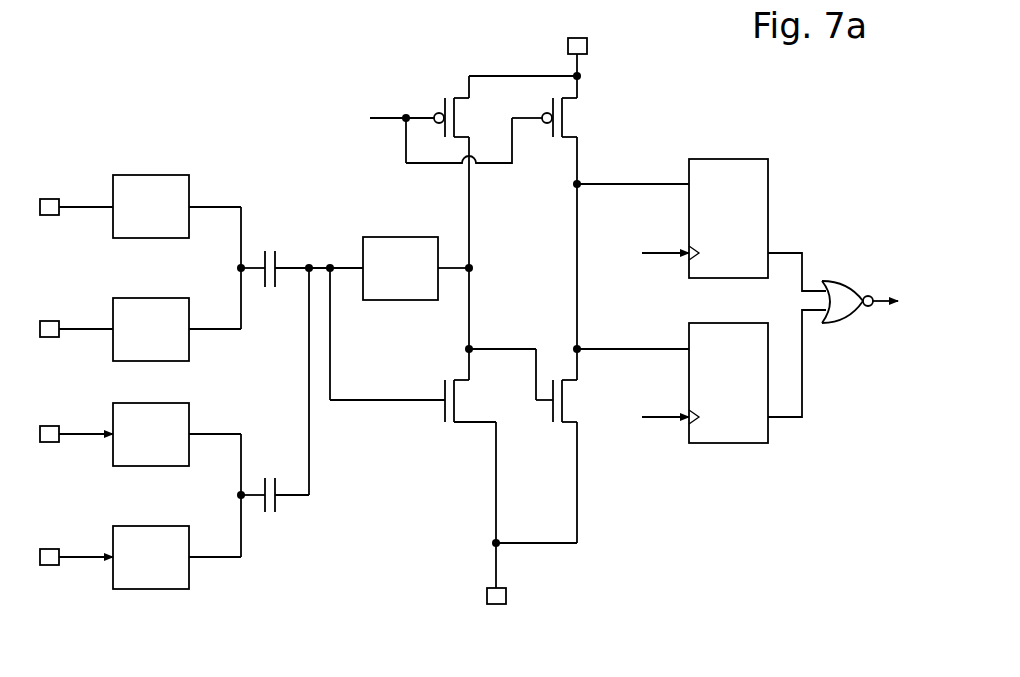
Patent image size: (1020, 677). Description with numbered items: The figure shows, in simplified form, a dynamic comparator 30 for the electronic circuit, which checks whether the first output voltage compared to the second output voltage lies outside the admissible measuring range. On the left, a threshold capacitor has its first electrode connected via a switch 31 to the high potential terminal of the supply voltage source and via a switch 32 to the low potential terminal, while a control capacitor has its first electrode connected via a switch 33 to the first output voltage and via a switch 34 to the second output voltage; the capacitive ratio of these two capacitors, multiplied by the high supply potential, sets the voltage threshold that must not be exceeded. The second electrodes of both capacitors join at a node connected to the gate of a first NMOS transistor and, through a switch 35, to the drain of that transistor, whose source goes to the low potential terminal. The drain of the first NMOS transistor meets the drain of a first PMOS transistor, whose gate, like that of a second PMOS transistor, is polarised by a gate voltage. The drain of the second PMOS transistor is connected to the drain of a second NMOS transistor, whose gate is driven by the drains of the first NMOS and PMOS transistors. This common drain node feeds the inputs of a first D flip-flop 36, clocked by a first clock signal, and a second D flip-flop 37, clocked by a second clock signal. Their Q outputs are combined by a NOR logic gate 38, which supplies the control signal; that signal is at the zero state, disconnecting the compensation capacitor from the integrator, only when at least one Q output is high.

The dynamic comparator 30 is at (826, 132).
The switch 31 is at (180, 194).
The switch 32 is at (182, 343).
The switch 33 is at (180, 422).
The switch 34 is at (182, 572).
The switch 35 is at (398, 290).
The first D flip-flop 36 is at (735, 165).
The second D flip-flop 37 is at (740, 445).
The NOR logic gate 38 is at (851, 312).